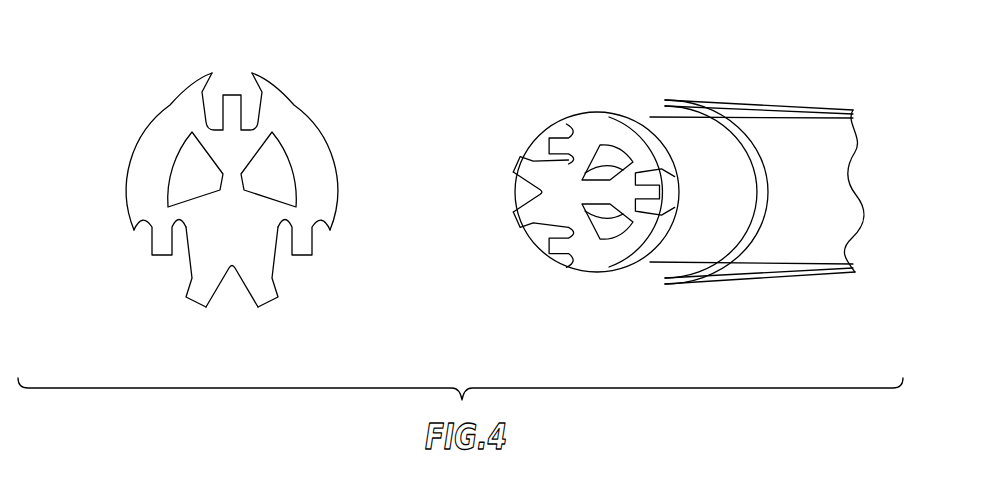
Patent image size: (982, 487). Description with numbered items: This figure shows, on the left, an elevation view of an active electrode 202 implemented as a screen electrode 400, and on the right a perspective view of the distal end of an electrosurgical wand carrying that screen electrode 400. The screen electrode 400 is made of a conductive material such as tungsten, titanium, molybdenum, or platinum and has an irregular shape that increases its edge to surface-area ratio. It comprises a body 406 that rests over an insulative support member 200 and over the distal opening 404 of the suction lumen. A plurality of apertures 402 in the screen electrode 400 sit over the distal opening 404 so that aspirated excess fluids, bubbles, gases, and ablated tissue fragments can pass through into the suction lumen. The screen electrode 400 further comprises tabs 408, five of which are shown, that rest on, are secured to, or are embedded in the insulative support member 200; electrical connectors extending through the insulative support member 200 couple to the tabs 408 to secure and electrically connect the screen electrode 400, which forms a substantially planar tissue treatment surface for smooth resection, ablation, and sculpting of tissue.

The insulative support member 200 is at (707, 242).
The active electrode 202 is at (111, 67).
The screen electrode 400 is at (270, 90).
The apertures 402 is at (187, 169).
The distal opening 404 is at (600, 210).
The body 406 is at (238, 232).
The tabs 408 is at (232, 93).